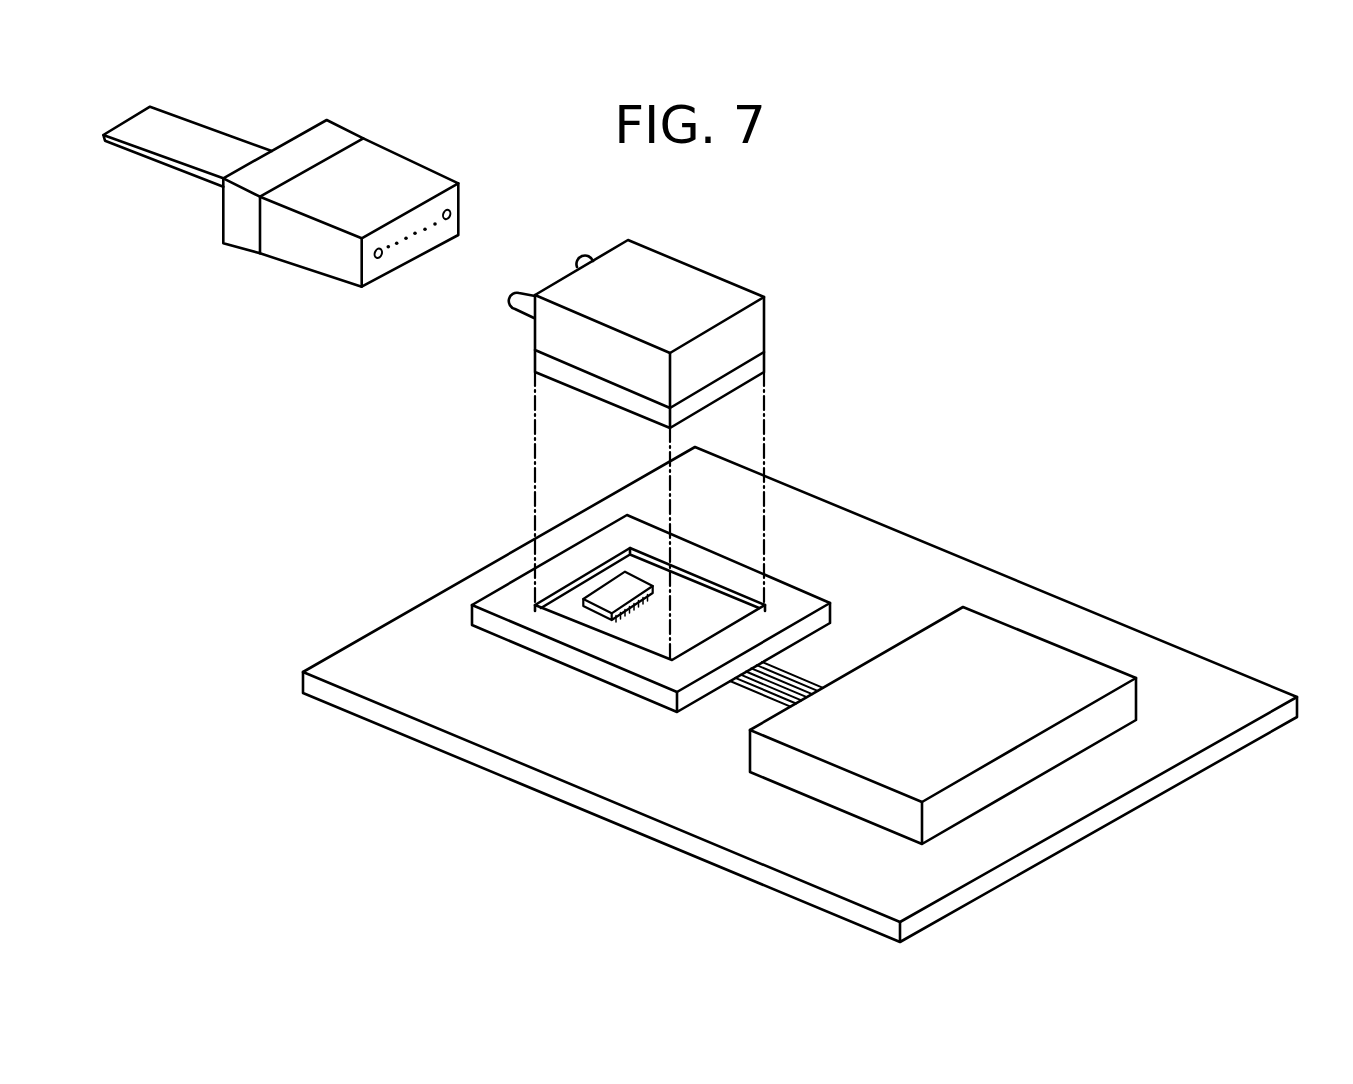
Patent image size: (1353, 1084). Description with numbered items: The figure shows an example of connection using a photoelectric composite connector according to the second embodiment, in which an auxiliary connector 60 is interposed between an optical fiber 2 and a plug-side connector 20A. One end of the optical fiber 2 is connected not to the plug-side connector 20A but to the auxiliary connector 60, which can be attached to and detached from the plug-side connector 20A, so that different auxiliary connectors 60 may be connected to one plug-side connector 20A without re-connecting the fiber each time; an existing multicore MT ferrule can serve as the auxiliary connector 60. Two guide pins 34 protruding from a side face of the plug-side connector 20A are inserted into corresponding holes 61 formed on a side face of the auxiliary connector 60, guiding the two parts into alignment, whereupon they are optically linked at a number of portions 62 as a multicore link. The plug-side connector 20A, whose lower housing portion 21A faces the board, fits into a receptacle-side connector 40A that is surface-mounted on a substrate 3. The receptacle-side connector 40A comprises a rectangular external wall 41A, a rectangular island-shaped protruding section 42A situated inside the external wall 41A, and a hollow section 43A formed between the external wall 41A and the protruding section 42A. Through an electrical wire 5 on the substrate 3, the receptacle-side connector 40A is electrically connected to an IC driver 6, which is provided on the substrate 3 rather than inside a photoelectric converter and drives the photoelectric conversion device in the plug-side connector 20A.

The optical fiber 2 is at (203, 137).
The auxiliary connector 60 is at (403, 177).
The holes 61 is at (380, 259).
The portions 62 is at (418, 237).
The plug-side connector 20A is at (673, 275).
The lower housing portion 21A is at (533, 358).
The guide pins 34 is at (523, 290).
The receptacle-side connector 40A is at (758, 592).
The external wall 41A is at (520, 635).
The protruding section 42A is at (600, 602).
The hollow section 43A is at (687, 597).
The electrical wire 5 is at (802, 677).
The IC driver 6 is at (1047, 663).
The substrate 3 is at (782, 853).